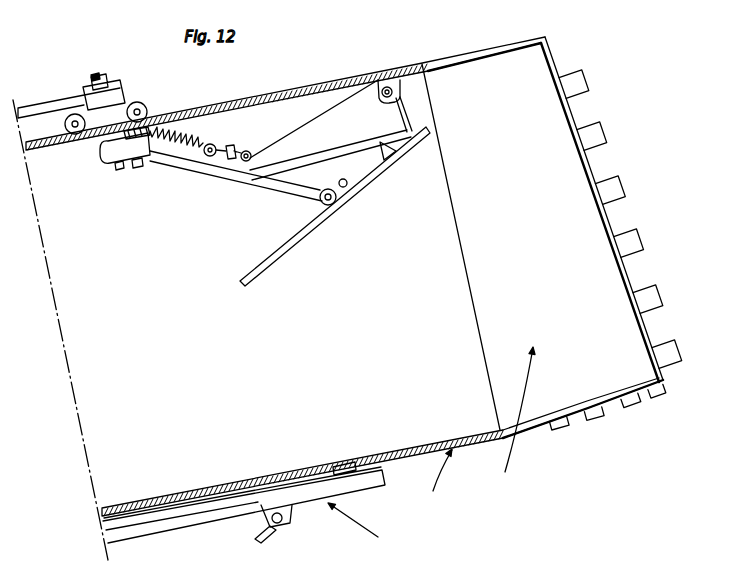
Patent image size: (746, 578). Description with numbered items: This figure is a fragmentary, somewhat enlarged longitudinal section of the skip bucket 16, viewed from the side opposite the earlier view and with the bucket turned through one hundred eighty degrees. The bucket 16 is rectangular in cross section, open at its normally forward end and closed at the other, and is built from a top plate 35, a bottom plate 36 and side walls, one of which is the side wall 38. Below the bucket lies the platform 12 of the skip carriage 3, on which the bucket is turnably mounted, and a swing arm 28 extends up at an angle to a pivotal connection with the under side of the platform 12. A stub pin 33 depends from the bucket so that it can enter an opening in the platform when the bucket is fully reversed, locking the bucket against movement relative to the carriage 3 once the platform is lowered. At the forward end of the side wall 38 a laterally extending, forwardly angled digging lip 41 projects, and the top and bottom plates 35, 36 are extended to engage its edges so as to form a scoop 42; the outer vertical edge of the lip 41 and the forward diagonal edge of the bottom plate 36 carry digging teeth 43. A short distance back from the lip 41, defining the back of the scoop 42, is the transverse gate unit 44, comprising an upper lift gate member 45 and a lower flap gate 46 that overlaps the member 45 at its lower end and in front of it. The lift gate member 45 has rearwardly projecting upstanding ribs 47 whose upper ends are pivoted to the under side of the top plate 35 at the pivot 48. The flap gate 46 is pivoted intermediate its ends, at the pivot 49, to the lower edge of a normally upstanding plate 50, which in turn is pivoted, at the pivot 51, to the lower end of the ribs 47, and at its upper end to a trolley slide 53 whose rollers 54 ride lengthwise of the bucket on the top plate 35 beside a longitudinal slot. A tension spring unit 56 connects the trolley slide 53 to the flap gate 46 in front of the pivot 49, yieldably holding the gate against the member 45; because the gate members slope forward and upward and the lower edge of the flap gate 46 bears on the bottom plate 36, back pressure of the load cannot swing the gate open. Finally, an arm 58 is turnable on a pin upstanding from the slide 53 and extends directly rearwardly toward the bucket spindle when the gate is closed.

The carriage 3 is at (356, 528).
The platform 12 is at (190, 515).
The skip bucket 16 is at (438, 478).
The swing arm 28 is at (281, 532).
The stub pin 33 is at (348, 460).
The top plate 35 is at (277, 93).
The bottom plate 36 is at (247, 480).
The side wall 38 is at (433, 297).
The digging lip 41 is at (547, 130).
The scoop 42 is at (517, 419).
The digging teeth 43 is at (622, 193).
The gate unit 44 is at (397, 163).
The upper lift gate member 45 is at (351, 141).
The flap gate 46 is at (287, 255).
The ribs 47 is at (323, 116).
The pivot 48 is at (388, 82).
The pivot 49 is at (340, 203).
The upstanding plate 50 is at (193, 171).
The pivot 51 is at (243, 162).
The trolley slide 53 is at (98, 124).
The rollers 54 is at (147, 107).
The tension spring unit 56 is at (200, 141).
The arm 58 is at (39, 108).